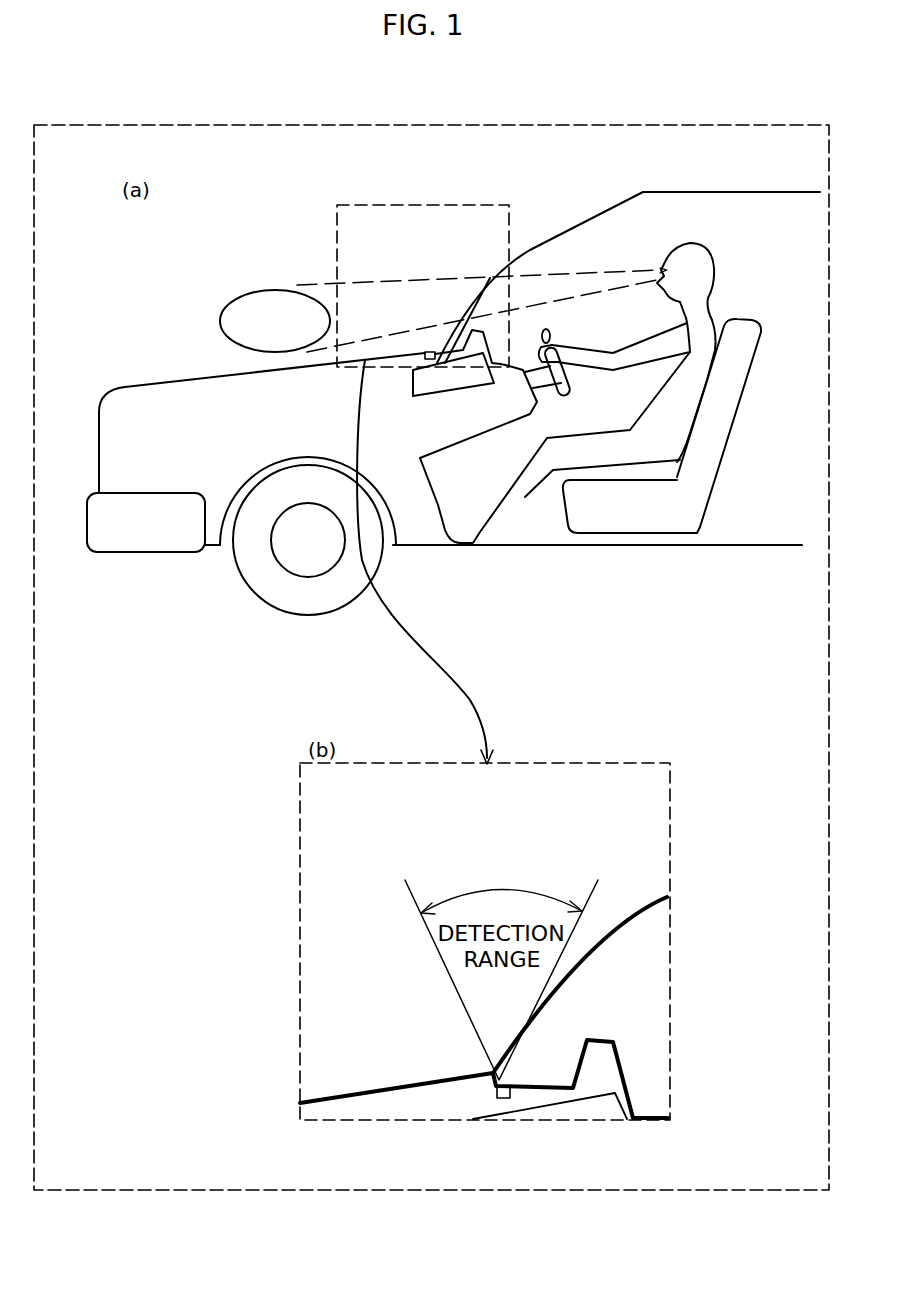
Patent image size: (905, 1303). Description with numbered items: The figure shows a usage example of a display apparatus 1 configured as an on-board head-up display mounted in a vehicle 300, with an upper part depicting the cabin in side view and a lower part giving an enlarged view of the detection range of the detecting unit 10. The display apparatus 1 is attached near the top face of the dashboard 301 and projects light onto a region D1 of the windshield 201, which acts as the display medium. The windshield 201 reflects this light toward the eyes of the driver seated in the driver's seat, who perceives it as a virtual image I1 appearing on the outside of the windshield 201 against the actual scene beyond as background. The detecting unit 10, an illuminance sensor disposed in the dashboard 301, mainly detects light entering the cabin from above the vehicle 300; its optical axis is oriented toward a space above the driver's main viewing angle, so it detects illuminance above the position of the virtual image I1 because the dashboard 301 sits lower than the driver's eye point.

The display apparatus 1 is at (415, 404).
The detecting unit 10 is at (427, 351).
The windshield 201 is at (598, 212).
The vehicle 300 is at (658, 192).
The dashboard 301 is at (508, 408).
The virtual image I1 is at (253, 291).
The region D1 is at (462, 300).